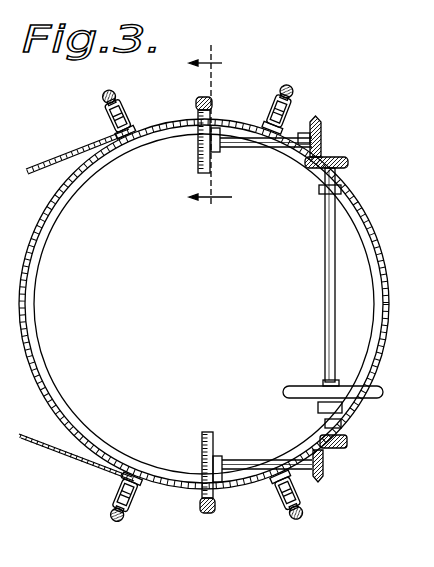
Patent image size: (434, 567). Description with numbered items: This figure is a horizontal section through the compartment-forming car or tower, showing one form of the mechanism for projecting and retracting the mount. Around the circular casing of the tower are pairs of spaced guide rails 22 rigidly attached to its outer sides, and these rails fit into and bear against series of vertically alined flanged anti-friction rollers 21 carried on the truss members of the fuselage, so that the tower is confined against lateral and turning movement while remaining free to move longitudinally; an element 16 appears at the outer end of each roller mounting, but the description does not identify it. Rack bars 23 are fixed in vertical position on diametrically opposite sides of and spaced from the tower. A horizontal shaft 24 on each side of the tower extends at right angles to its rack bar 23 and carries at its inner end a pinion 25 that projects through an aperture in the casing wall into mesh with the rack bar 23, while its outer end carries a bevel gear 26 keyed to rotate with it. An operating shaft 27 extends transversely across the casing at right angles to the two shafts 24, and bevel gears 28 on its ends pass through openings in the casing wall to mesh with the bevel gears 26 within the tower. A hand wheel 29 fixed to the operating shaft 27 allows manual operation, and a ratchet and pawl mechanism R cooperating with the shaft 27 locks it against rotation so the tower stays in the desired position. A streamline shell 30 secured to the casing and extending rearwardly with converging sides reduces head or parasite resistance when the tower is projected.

The roller pin 16 is at (113, 97).
The flanged anti-friction rollers 21 is at (298, 111).
The guide rails 22 is at (136, 134).
The rack bars 23 is at (212, 107).
The shaft 24 is at (231, 147).
The pinion 25 is at (200, 172).
The bevel gears 26 is at (323, 134).
The operating shaft 27 is at (324, 277).
The bevel gears 28 is at (346, 163).
The operating hand wheel 29 is at (381, 399).
The shell 30 is at (50, 159).
The ratchet and pawl mechanism R is at (340, 410).